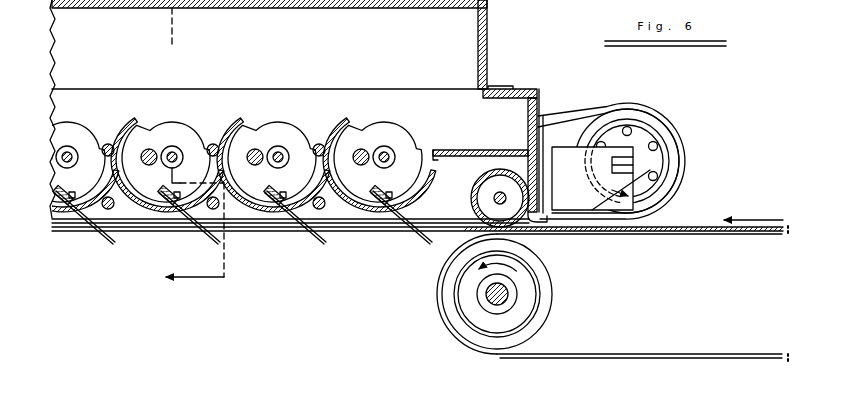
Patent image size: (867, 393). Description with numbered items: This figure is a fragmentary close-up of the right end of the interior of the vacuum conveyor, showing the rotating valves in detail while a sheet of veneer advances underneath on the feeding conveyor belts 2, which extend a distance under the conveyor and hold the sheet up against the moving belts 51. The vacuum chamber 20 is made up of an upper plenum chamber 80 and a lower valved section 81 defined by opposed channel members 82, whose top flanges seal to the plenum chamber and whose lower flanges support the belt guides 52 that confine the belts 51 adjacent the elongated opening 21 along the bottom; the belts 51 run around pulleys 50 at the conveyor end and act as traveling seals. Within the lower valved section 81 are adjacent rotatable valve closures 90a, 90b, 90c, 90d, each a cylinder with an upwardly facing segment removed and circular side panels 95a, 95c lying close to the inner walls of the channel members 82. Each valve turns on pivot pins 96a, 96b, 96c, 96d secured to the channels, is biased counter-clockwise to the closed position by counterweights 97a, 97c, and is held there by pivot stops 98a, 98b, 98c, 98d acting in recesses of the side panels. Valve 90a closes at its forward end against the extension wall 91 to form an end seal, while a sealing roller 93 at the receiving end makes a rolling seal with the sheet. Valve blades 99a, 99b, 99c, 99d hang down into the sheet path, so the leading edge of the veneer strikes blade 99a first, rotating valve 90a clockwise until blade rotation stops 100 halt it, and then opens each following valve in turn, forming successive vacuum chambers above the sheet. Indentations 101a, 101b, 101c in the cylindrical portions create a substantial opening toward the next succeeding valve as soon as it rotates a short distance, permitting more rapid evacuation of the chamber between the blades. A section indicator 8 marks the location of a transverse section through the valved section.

The conveyor belts 2 is at (616, 353).
The section line 8- 8 is at (181, 148).
The vacuum chamber 20 is at (477, 33).
The elongated opening 21 is at (339, 241).
The pulleys 50 is at (670, 159).
The endless conveyor belts 51 is at (568, 114).
The belt guides 52 is at (443, 219).
The upper plenum chamber 80 is at (296, 49).
The lower valved section 81 is at (198, 110).
The channel members 82 is at (470, 117).
The rotatable valve closure 90a is at (392, 151).
The rotatable valve closure 90b is at (278, 157).
The rotatable valve closure 90c is at (166, 152).
The rotatable valve closure 90d is at (69, 157).
The extension wall 91 is at (484, 153).
The sealing roller 93 is at (480, 190).
The side panel 95a is at (379, 165).
The side panel 95c is at (167, 165).
The pivot pin 96a is at (390, 135).
The pivot pin 96b is at (279, 135).
The pivot pin 96c is at (172, 157).
The pivot pin 96d is at (68, 135).
The counterweight 97a is at (367, 133).
The counterweight 97c is at (151, 133).
The pivot stop 98a is at (442, 139).
The pivot stop 98b is at (320, 137).
The pivot stop 98c is at (222, 136).
The pivot stop 98d is at (108, 136).
The valve blade 99a is at (401, 237).
The valve blade 99b is at (295, 234).
The valve blade 99c is at (189, 230).
The valve blade 99d is at (84, 230).
The blade rotation stops 100 is at (109, 210).
The indentation 101a is at (378, 217).
The indentation 101b is at (270, 217).
The indentation 101c is at (164, 217).